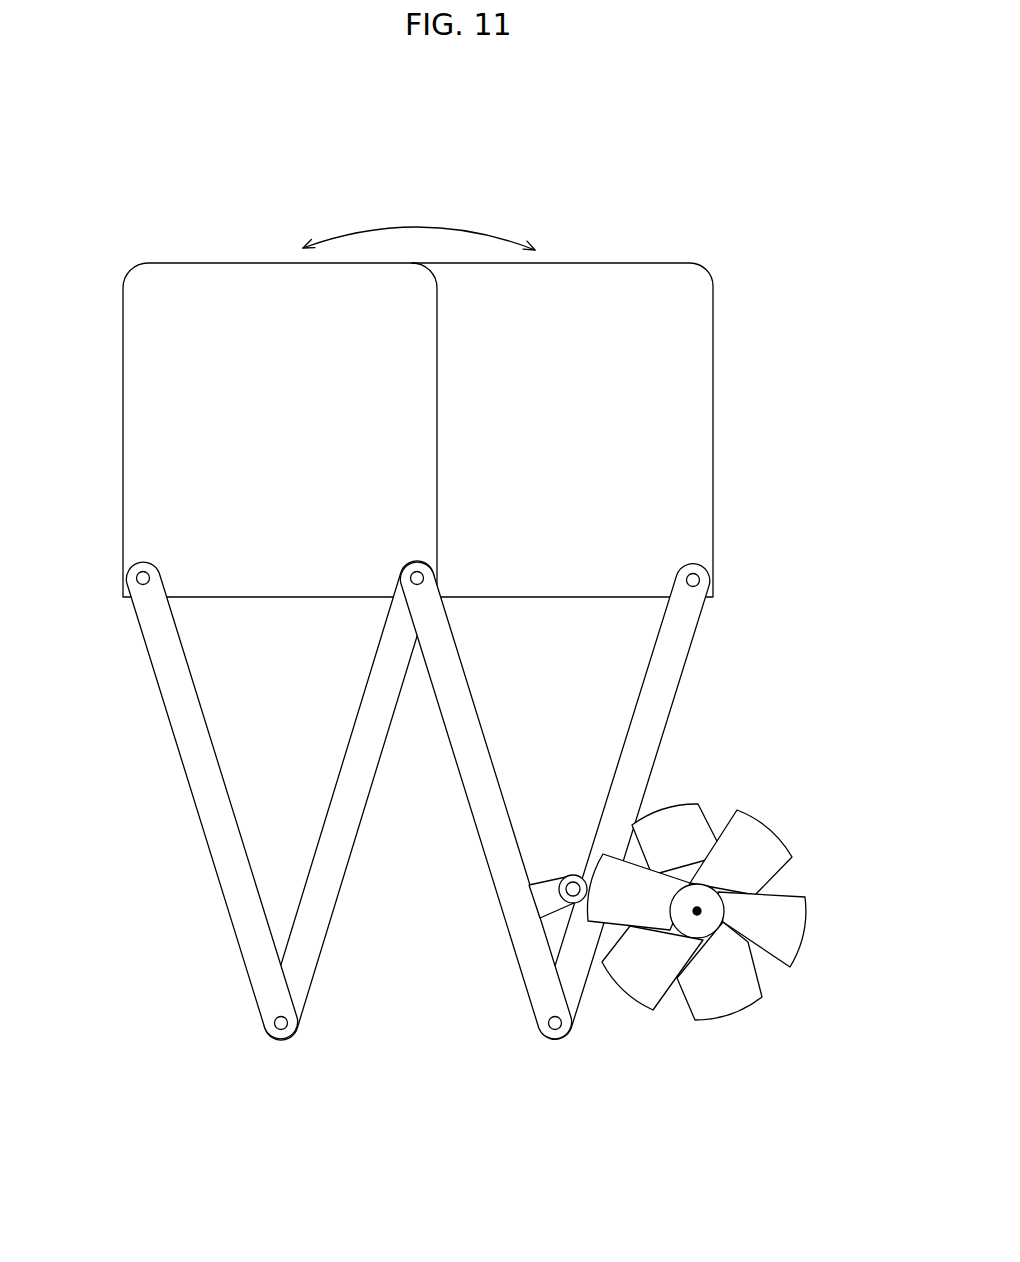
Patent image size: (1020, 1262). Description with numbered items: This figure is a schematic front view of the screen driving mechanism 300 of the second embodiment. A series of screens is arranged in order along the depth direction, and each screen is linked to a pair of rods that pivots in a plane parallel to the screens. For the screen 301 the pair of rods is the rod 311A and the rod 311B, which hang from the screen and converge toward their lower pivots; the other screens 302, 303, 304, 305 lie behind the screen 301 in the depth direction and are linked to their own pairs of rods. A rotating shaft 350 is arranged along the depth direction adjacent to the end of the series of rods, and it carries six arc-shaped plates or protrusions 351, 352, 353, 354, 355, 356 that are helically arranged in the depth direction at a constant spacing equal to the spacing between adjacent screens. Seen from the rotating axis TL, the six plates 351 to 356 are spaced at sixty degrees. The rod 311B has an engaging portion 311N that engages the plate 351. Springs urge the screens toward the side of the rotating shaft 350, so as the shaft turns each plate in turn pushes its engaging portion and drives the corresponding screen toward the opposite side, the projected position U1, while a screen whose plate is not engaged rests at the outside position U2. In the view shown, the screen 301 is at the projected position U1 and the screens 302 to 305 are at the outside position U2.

The screen driving mechanism 300 is at (740, 185).
The projected position U1 is at (252, 253).
The outside position U2 is at (592, 253).
The screen 301 is at (123, 512).
The screen 302 is at (713, 512).
The screen 303 is at (562, 430).
The screen 304 is at (562, 430).
The screen 305 is at (562, 430).
The rod 311A is at (195, 797).
The rod 311B is at (468, 797).
The engaging portion 311N is at (545, 895).
The rotating shaft 350 is at (750, 773).
The arc-shaped plate 351 is at (638, 893).
The arc-shaped plate 352 is at (643, 965).
The arc-shaped plate 353 is at (720, 987).
The arc-shaped plate 354 is at (764, 927).
The arc-shaped plate 355 is at (750, 852).
The arc-shaped plate 356 is at (676, 833).
The rotating axis TL is at (700, 911).